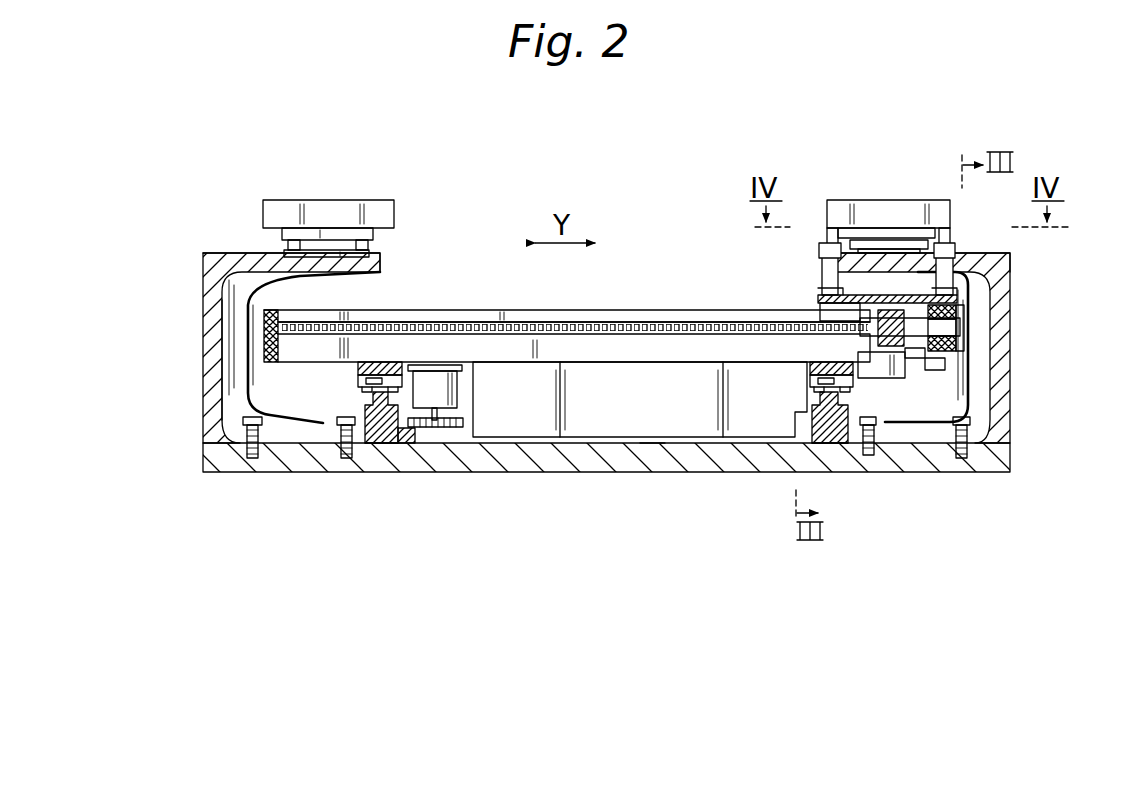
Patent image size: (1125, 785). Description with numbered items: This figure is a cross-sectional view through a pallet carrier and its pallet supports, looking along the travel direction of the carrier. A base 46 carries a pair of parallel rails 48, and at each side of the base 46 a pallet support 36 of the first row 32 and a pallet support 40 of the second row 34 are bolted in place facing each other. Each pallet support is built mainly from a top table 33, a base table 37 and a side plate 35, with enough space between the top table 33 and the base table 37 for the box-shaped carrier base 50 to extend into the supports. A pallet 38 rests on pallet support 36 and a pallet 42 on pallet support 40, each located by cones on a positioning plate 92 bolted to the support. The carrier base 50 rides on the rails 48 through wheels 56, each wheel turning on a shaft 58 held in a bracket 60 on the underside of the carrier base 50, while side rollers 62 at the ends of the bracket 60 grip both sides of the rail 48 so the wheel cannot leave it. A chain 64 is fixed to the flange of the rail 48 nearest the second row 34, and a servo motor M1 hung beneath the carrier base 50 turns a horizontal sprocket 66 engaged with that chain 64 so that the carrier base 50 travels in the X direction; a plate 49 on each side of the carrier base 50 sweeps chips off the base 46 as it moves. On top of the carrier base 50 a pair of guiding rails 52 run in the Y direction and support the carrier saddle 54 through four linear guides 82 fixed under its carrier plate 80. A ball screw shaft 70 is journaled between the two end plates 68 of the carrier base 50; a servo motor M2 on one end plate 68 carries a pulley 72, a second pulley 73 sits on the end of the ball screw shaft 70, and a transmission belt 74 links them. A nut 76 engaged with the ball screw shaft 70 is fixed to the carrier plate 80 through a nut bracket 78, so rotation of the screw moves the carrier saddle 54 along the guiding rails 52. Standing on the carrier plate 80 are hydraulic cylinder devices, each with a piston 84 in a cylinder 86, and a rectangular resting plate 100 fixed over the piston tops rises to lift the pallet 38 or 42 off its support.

The first row 32 is at (1012, 350).
The top table 33 is at (270, 263).
The second row 34 is at (200, 341).
The side plate 35 is at (212, 310).
The pallet support 36 is at (1012, 375).
The base table 37 is at (262, 445).
The pallet 38 is at (875, 205).
The pallet support 40 is at (208, 383).
The pallet 42 is at (345, 207).
The base 46 is at (590, 462).
The rail 48 is at (375, 443).
The plate 49 is at (648, 445).
The carrier base 50 is at (652, 353).
The guiding rail 52 is at (625, 320).
The carrier saddle 54 is at (765, 332).
The wheel 56 is at (365, 445).
The shaft 58 is at (360, 388).
The bracket 60 is at (358, 370).
The side roller 62 is at (340, 428).
The chain 64 is at (405, 443).
The sprocket 66 is at (452, 432).
The end plate 68 is at (271, 364).
The ball screw shaft 70 is at (510, 322).
The pulley 72 is at (950, 358).
The pulley 73 is at (945, 318).
The transmission belt 74 is at (950, 337).
The nut 76 is at (835, 352).
The nut bracket 78 is at (830, 328).
The carrier plate 80 is at (830, 298).
The linear guide 82 is at (835, 315).
The piston 84 is at (825, 247).
The cylinder 86 is at (820, 258).
The positioning plate 92 is at (900, 245).
The resting plate 100 is at (845, 225).
The servo motor M1 is at (440, 387).
The servo motor M2 is at (883, 384).